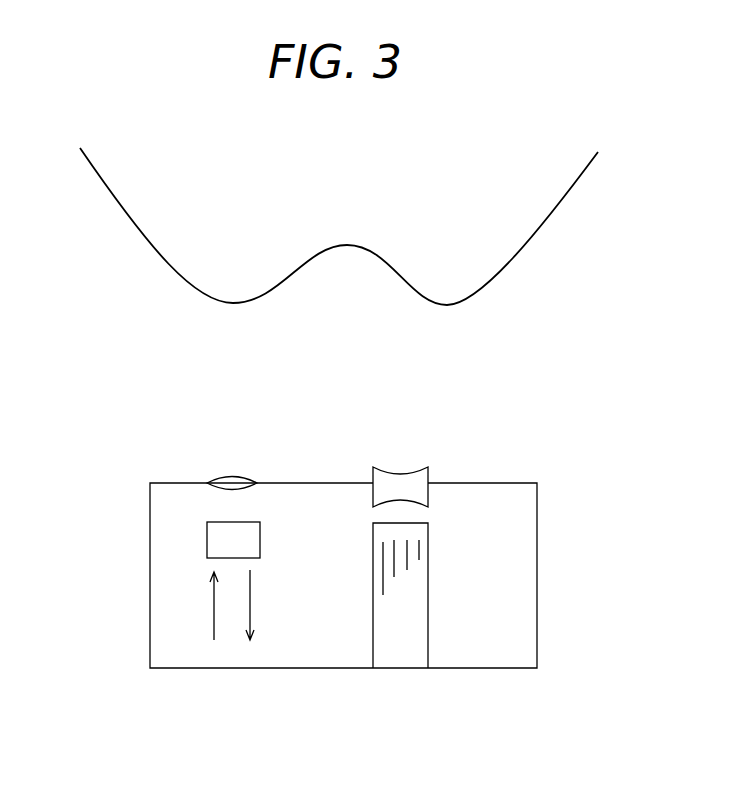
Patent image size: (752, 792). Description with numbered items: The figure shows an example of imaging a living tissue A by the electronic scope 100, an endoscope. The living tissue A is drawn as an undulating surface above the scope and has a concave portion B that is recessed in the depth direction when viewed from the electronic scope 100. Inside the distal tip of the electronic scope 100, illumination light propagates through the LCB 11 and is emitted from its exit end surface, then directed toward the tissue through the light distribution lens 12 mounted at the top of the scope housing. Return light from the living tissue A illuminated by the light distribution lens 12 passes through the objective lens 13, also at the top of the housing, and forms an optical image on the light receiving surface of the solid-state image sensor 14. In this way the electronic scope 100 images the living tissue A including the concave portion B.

The electronic scope 100 is at (537, 583).
The LCB 11 is at (428, 603).
The light distribution lens 12 is at (408, 473).
The objective lens 13 is at (240, 475).
The solid-state image sensor 14 is at (260, 535).
The living tissue A is at (463, 303).
The concave portion B is at (358, 306).